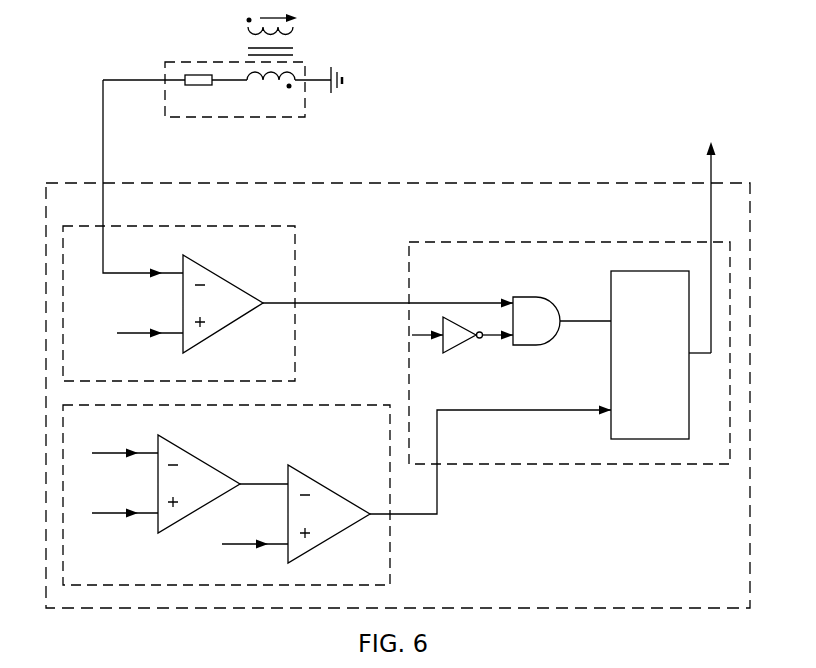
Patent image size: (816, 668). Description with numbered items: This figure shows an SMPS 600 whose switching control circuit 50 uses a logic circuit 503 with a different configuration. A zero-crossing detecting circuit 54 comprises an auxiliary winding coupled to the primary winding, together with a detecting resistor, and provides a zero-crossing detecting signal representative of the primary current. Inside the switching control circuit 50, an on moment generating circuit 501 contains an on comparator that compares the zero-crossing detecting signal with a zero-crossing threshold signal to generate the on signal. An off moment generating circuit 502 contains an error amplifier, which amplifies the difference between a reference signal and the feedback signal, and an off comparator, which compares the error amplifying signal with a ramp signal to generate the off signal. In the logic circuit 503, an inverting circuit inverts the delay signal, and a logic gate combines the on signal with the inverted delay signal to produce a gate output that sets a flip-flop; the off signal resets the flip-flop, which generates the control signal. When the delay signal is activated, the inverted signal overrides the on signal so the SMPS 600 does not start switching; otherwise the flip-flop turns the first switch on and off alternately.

The SMPS 600 is at (558, 58).
The switching control circuit 50 is at (393, 183).
The zero-crossing detecting circuit 54 is at (210, 118).
The on moment generating circuit 501 is at (200, 226).
The off moment generating circuit 502 is at (390, 567).
The logic circuit 503 is at (545, 242).